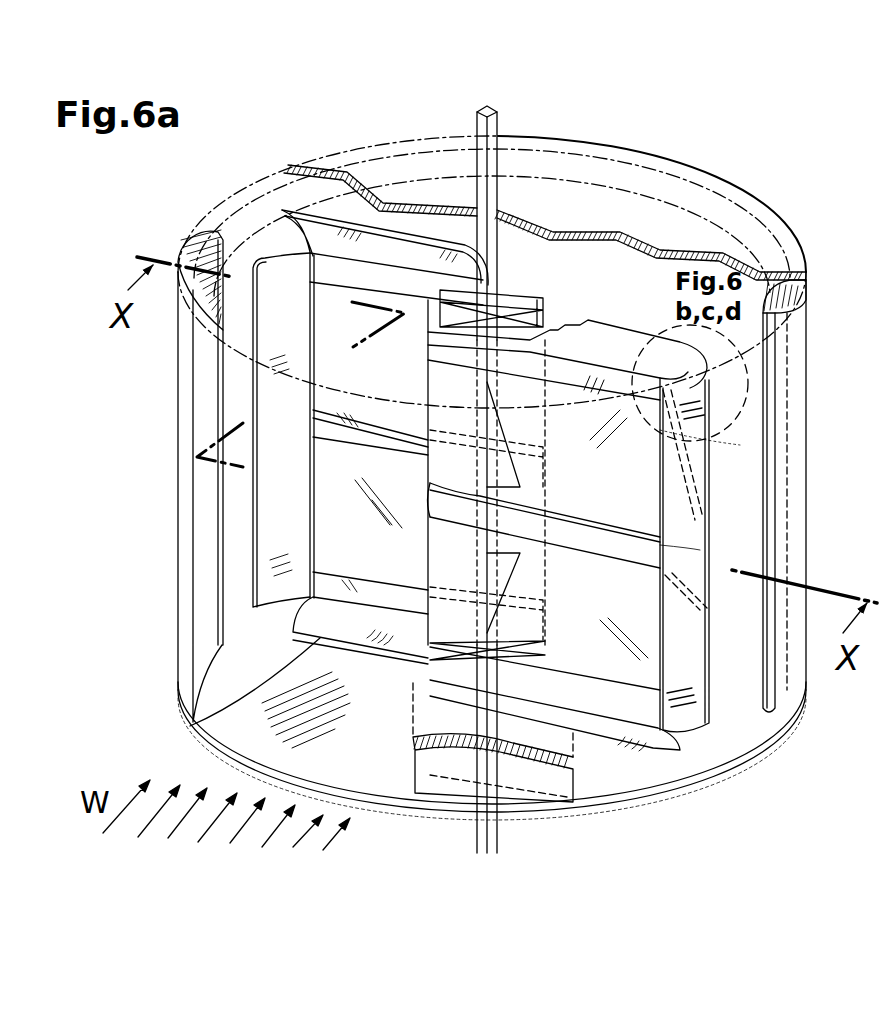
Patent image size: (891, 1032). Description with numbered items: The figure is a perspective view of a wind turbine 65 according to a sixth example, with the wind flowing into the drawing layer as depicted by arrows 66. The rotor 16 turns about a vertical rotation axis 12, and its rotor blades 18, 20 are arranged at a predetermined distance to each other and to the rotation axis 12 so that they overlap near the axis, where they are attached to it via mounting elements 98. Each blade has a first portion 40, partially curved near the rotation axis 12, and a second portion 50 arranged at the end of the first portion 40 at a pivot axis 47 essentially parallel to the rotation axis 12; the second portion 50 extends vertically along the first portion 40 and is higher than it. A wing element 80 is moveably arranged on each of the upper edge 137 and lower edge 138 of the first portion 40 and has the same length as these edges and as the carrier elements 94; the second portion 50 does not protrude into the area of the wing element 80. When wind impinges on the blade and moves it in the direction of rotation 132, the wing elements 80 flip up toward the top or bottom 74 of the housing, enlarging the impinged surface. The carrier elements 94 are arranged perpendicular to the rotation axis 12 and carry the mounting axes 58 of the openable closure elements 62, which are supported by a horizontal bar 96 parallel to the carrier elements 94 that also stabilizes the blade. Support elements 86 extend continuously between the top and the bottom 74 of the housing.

The rotation axis 12 is at (497, 117).
The rotor 16 is at (627, 768).
The rotor blade 18 is at (293, 643).
The rotor blade 20 is at (658, 757).
The first portion 40 is at (603, 315).
The pivot axis 47 is at (310, 495).
The second portion 50 is at (246, 557).
The mounting axis 58 is at (362, 298).
The openable closure element 62 is at (680, 487).
The wind turbine 65 is at (772, 158).
The arrows 66 is at (203, 830).
The bottom 74 is at (410, 820).
The wing element 80 is at (345, 210).
The support element 86 is at (593, 140).
The carrier element 94 is at (215, 330).
The horizontal bar 96 is at (680, 548).
The mounting element 98 is at (527, 310).
The direction of rotation 132 is at (347, 655).
The upper edge 137 is at (395, 270).
The lower edge 138 is at (413, 617).